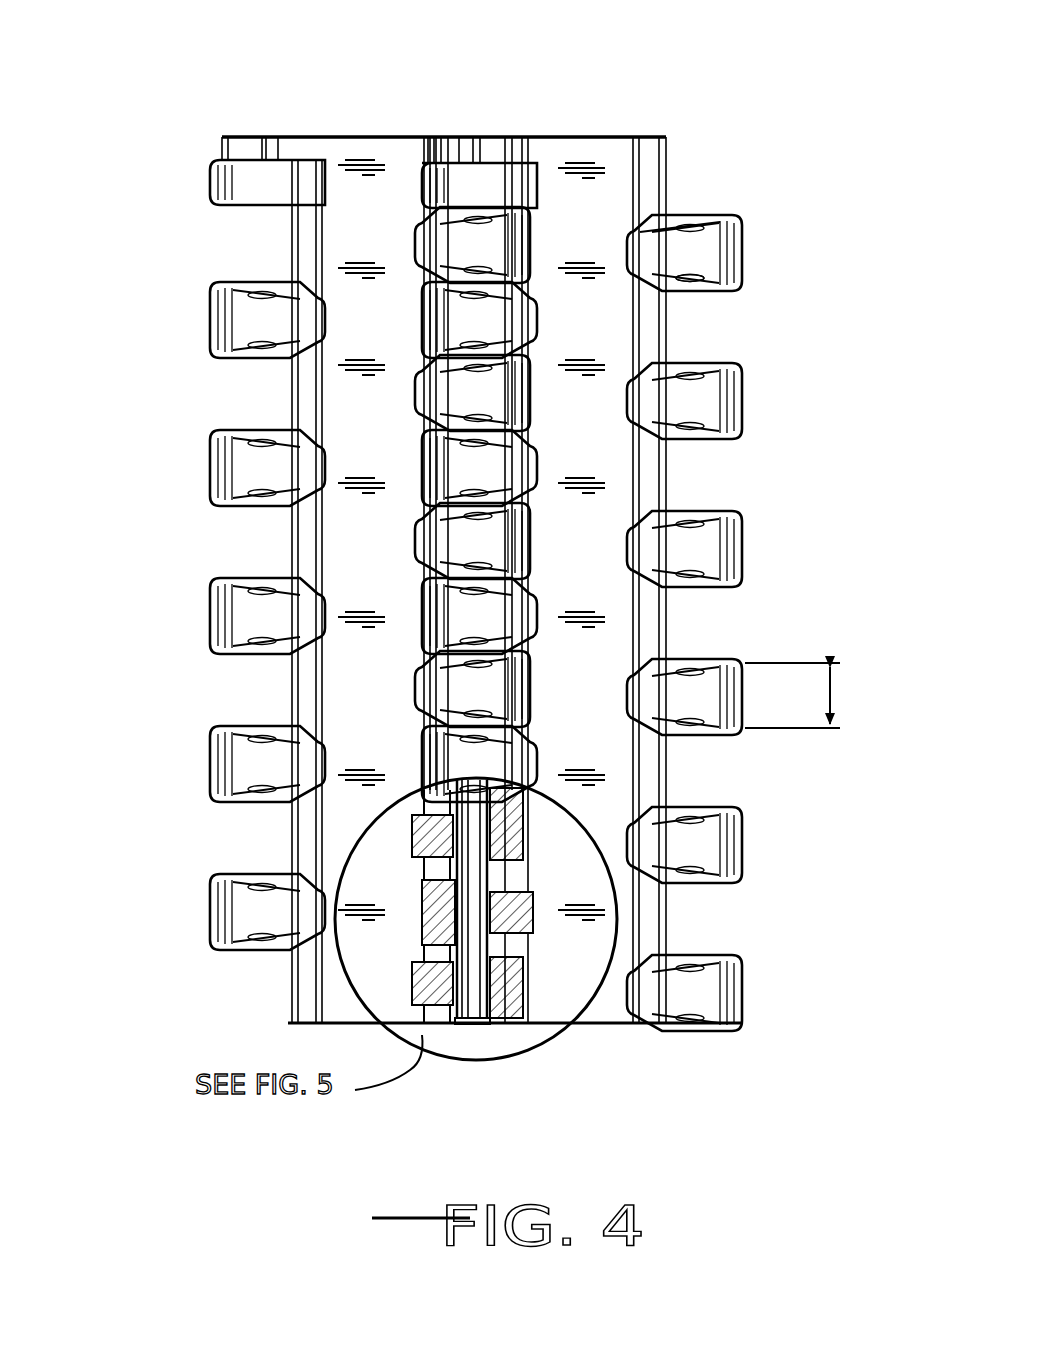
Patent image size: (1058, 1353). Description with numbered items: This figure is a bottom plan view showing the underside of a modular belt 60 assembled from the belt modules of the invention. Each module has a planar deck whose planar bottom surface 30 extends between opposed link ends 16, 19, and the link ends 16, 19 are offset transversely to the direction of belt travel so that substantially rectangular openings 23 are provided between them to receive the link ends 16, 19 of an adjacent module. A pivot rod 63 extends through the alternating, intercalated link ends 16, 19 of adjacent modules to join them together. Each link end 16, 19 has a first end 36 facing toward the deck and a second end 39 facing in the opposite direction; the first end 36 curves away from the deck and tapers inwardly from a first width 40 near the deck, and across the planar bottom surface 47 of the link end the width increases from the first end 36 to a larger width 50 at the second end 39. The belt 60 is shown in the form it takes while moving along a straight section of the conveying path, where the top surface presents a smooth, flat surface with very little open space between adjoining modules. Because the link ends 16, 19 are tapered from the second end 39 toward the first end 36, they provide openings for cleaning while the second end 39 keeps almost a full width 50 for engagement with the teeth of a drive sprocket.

The modular belt 60 is at (530, 86).
The link end 16 is at (465, 539).
The link end 19 is at (205, 313).
The rectangular opening 23 is at (250, 386).
The bottom surface 30 is at (393, 222).
The first end 36 is at (614, 399).
The second end 39 is at (756, 387).
The first width 40 is at (676, 215).
The planar bottom surface 47 is at (690, 265).
The width 50 is at (833, 690).
The pivot rod 63 is at (472, 1000).